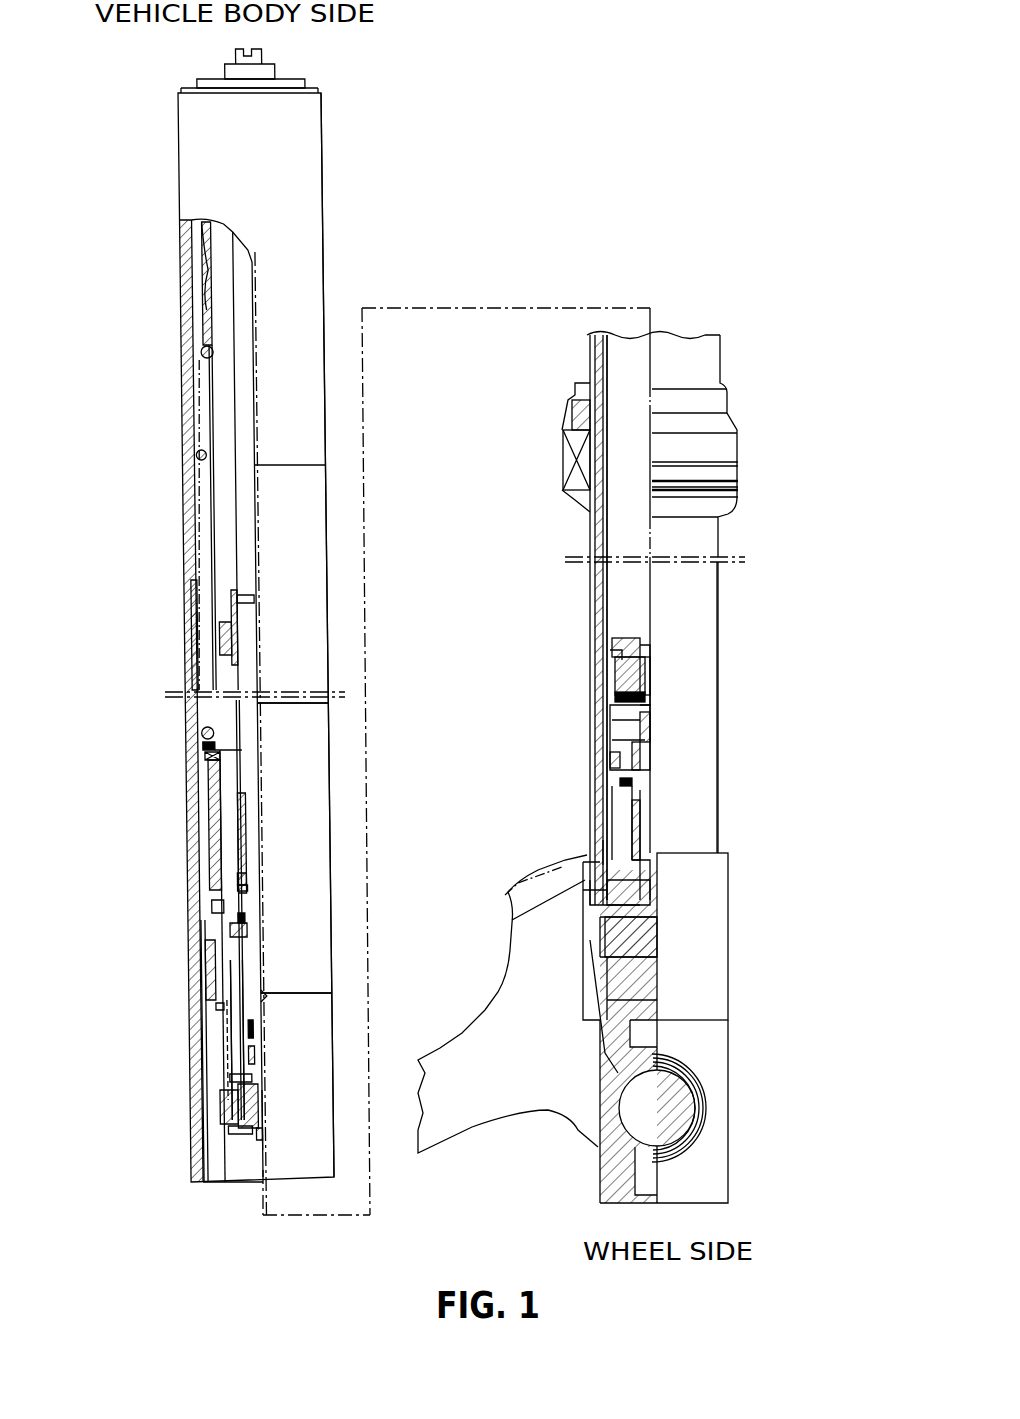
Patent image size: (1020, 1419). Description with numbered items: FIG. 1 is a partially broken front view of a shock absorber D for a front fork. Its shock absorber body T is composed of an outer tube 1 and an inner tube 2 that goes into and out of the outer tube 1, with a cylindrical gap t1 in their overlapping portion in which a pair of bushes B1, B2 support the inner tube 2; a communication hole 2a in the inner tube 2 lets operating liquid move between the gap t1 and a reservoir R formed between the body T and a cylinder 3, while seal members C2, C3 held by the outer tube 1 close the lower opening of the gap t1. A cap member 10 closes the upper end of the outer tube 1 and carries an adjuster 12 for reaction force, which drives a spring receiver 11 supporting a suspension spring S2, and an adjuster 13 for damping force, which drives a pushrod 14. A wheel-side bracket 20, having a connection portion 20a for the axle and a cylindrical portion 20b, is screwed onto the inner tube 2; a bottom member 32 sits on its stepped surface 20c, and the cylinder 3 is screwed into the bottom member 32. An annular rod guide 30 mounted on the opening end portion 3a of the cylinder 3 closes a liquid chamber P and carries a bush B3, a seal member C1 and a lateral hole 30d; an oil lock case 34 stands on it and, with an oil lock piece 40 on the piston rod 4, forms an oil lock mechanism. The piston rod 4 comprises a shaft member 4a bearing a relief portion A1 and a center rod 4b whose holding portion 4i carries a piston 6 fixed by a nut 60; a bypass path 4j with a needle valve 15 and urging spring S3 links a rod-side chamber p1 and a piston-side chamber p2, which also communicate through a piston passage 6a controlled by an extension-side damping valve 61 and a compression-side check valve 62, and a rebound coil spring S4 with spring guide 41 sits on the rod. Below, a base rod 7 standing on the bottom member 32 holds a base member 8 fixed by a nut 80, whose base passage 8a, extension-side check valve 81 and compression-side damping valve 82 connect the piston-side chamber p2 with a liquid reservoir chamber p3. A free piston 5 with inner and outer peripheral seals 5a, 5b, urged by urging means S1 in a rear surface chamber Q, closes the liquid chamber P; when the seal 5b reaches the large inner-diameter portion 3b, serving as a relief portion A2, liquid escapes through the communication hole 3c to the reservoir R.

The outer tube 1 is at (322, 262).
The shock absorber body T is at (322, 160).
The cap member 10 is at (180, 93).
The adjuster for adjusting a reaction force 12 is at (305, 70).
The adjuster for adjusting a damping force 13 is at (236, 58).
The spring receiver 11 is at (200, 240).
The suspension spring S2 is at (198, 352).
The reservoir R is at (196, 383).
The piston rod 4 is at (231, 508).
The bush B1 is at (185, 600).
The oil lock piece 40 is at (213, 638).
The shaft member 4a is at (256, 730).
The cylindrical gap t1 is at (195, 735).
The oil lock case 34 is at (200, 785).
The rod guide 30 is at (229, 850).
The lateral hole 30d is at (202, 903).
The bush B3 is at (237, 873).
The relief portion A1 is at (238, 888).
The seal member C1 is at (235, 918).
The spring guide 41 is at (237, 932).
The communication hole 2a is at (191, 952).
The opening end portion 3a is at (195, 973).
The coil spring S4 is at (205, 1006).
The pushrod 14 is at (252, 998).
The center rod 4b is at (226, 1046).
The rod-side chamber p1 is at (216, 1060).
The urging spring S3 is at (242, 1030).
The needle valve 15 is at (243, 1058).
The compression-side check valve 62 is at (218, 1080).
The piston passage 6a is at (246, 1105).
The piston 6 is at (208, 1118).
The extension-side damping valve 61 is at (218, 1134).
The holding portion 4i is at (252, 1125).
The bypass path 4j is at (250, 1138).
The nut 60 is at (236, 1182).
The shock absorber D is at (670, 288).
The cylinder 3 is at (592, 357).
The piston-side chamber p2 is at (645, 370).
The inner tube 2 is at (717, 655).
The bush B2 is at (572, 420).
The seal member C3 is at (571, 470).
The seal member C2 is at (566, 495).
The liquid chamber P is at (609, 526).
The nut 80 is at (628, 638).
The extension-side check valve 81 is at (612, 648).
The base member 8 is at (612, 672).
The base passage 8a is at (650, 675).
The compression-side damping valve 82 is at (615, 697).
The free piston 5 is at (612, 730).
The liquid reservoir chamber p3 is at (650, 722).
The outer peripheral seal 5b is at (610, 760).
The inner peripheral seal 5a is at (640, 762).
The urging means S1 is at (620, 782).
The rear surface chamber Q is at (612, 805).
The base rod 7 is at (640, 822).
The communication hole 3c is at (603, 852).
The relief portion A2 is at (640, 899).
The large inner-diameter portion 3b is at (590, 905).
The bottom member 32 is at (645, 932).
The wheel-side bracket 20 is at (730, 964).
The stepped surface 20c is at (597, 945).
The connection portion 20a is at (735, 1125).
The cylindrical portion 20b is at (508, 905).